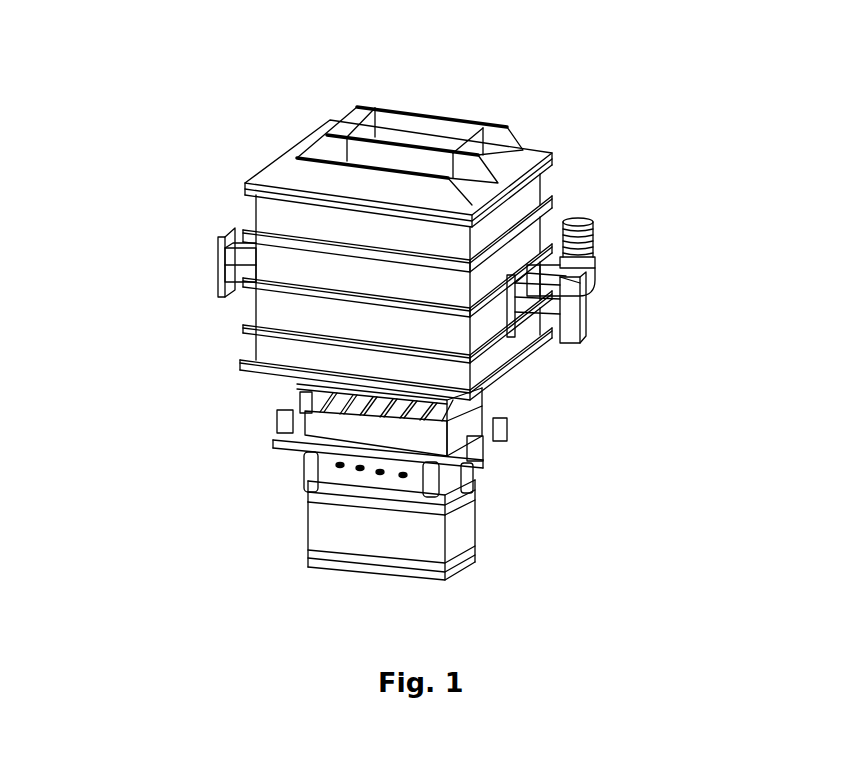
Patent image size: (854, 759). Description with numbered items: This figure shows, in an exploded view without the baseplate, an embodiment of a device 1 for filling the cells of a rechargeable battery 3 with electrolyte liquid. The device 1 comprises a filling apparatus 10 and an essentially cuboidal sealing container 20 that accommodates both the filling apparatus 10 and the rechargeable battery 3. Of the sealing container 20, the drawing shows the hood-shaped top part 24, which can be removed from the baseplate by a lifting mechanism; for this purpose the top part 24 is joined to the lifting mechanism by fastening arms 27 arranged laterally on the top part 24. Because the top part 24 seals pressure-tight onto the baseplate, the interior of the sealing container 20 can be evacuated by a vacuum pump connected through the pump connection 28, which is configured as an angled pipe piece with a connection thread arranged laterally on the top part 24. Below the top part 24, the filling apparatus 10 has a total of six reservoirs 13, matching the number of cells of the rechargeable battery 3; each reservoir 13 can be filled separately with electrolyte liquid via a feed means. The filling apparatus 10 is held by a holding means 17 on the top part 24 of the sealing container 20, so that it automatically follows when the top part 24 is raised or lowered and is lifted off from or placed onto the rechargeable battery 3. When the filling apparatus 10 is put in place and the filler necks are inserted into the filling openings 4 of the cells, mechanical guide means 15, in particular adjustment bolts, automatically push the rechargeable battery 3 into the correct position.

The device 1 is at (196, 149).
The rechargeable battery 3 is at (460, 535).
The filling openings 4 is at (335, 497).
The filling apparatus 10 is at (528, 406).
The reservoir 13 is at (340, 440).
The mechanical guide means 15 is at (303, 457).
The holding means 17 is at (303, 410).
The sealing container 20 is at (620, 192).
The top part 24 is at (522, 193).
The fastening arms 27 is at (222, 265).
The pump connection 28 is at (594, 255).